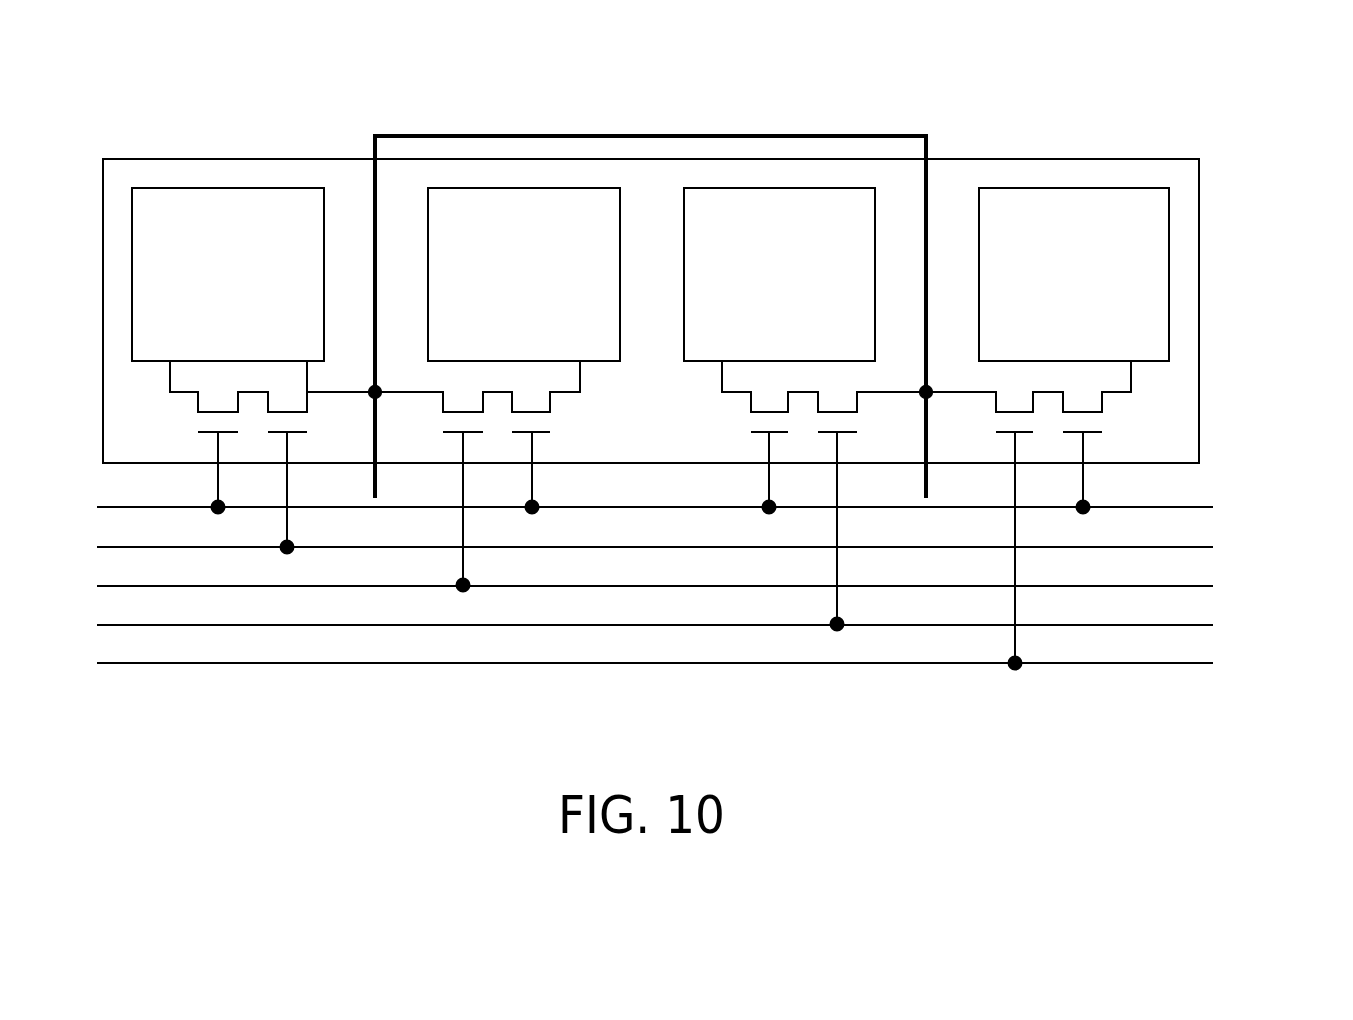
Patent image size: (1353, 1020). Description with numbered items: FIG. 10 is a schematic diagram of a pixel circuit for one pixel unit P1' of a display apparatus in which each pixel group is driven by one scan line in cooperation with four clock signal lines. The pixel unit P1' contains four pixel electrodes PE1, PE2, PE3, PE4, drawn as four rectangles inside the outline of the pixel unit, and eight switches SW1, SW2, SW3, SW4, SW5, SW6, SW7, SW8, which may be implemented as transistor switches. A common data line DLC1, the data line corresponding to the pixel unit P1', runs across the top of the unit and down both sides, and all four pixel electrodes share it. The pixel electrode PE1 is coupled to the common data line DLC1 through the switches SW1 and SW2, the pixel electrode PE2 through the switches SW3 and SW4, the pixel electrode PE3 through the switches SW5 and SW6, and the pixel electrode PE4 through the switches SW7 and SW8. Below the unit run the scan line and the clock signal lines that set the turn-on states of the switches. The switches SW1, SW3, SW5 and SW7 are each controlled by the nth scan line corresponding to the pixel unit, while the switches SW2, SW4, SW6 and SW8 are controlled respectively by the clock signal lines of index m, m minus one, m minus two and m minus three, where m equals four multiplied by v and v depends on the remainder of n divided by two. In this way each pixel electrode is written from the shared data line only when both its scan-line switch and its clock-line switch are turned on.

The pixel unit P1' is at (651, 261).
The common data line DLC1 is at (928, 188).
The pixel electrode PE1 is at (1077, 188).
The pixel electrode PE2 is at (775, 188).
The pixel electrode PE3 is at (522, 188).
The pixel electrode PE4 is at (228, 188).
The switch SW1 is at (1089, 437).
The switch SW2 is at (987, 516).
The switch SW3 is at (762, 437).
The switch SW4 is at (864, 496).
The switch SW5 is at (538, 437).
The switch SW6 is at (436, 477).
The switch SW7 is at (211, 437).
The switch SW8 is at (314, 457).